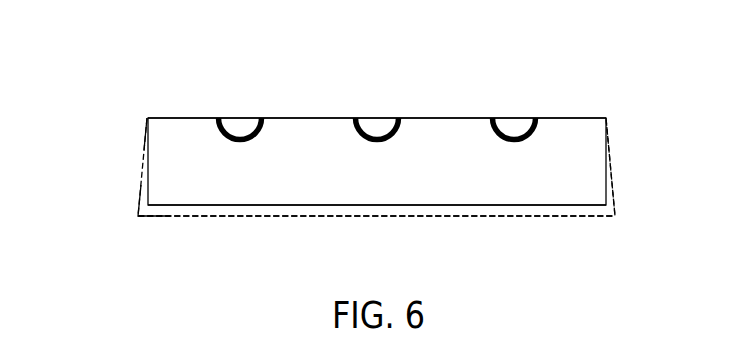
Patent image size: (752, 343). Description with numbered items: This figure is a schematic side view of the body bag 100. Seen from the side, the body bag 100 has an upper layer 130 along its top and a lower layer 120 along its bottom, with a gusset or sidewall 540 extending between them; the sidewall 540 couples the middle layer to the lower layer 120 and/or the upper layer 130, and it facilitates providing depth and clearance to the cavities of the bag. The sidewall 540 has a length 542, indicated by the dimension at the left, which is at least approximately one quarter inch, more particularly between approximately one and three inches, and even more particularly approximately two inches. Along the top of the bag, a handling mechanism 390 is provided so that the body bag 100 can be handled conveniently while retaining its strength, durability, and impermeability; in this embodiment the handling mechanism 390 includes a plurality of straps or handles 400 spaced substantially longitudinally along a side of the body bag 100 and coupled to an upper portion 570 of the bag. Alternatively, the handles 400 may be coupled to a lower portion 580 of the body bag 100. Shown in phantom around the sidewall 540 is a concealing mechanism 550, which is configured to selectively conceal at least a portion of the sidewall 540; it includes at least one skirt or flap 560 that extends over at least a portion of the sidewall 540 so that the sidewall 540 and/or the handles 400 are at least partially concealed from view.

The body bag 100 is at (593, 230).
The lower layer 120 is at (200, 207).
The upper layer 130 is at (218, 120).
The handling mechanism 390 is at (243, 97).
The handles 400 is at (372, 120).
The sidewall 540 is at (582, 142).
The length of sidewall 542 is at (35, 118).
The concealing mechanism 550 is at (614, 183).
The flap 560 is at (500, 218).
The upper portion 570 is at (137, 120).
The lower portion 580 is at (130, 216).